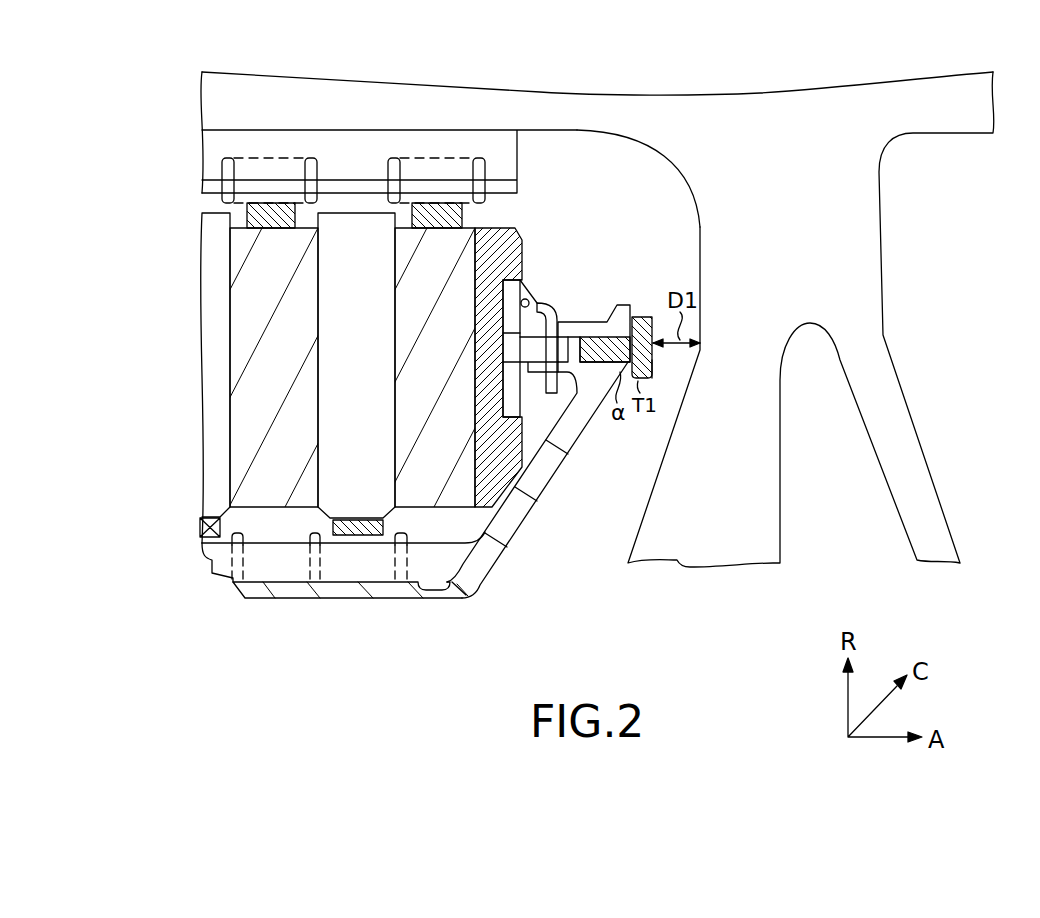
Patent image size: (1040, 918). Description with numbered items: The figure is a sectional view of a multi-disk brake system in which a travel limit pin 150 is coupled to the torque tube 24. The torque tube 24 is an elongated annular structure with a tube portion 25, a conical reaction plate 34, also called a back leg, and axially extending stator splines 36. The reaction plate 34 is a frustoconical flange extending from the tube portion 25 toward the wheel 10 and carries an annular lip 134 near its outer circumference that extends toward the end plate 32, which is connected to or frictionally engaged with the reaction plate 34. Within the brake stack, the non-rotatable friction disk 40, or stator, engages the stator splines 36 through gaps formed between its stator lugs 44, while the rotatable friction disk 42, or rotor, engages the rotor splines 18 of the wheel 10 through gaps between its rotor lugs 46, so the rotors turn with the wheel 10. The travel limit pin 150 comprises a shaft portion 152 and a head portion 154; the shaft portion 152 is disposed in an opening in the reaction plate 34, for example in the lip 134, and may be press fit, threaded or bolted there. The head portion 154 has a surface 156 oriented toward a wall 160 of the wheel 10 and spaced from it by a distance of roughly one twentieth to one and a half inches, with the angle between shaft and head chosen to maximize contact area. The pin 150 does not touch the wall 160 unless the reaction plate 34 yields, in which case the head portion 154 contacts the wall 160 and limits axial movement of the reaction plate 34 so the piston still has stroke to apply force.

The wheel 10 is at (758, 262).
The rotor splines 18 is at (512, 160).
The torque tube 24 is at (262, 600).
The tube portion 25 is at (283, 590).
The end plate 32 is at (495, 258).
The reaction plate 34 is at (545, 473).
The stator splines 36 is at (458, 563).
The non-rotatable friction disk 40 is at (364, 386).
The rotatable friction disk 42 is at (285, 386).
The stator lugs 44 is at (400, 570).
The rotor lugs 46 is at (388, 167).
The lip 134 is at (585, 325).
The travel limit pin 150 is at (656, 357).
The shaft portion 152 is at (590, 352).
The head portion 154 is at (643, 317).
The surface 156 is at (653, 367).
The wall 160 is at (695, 217).